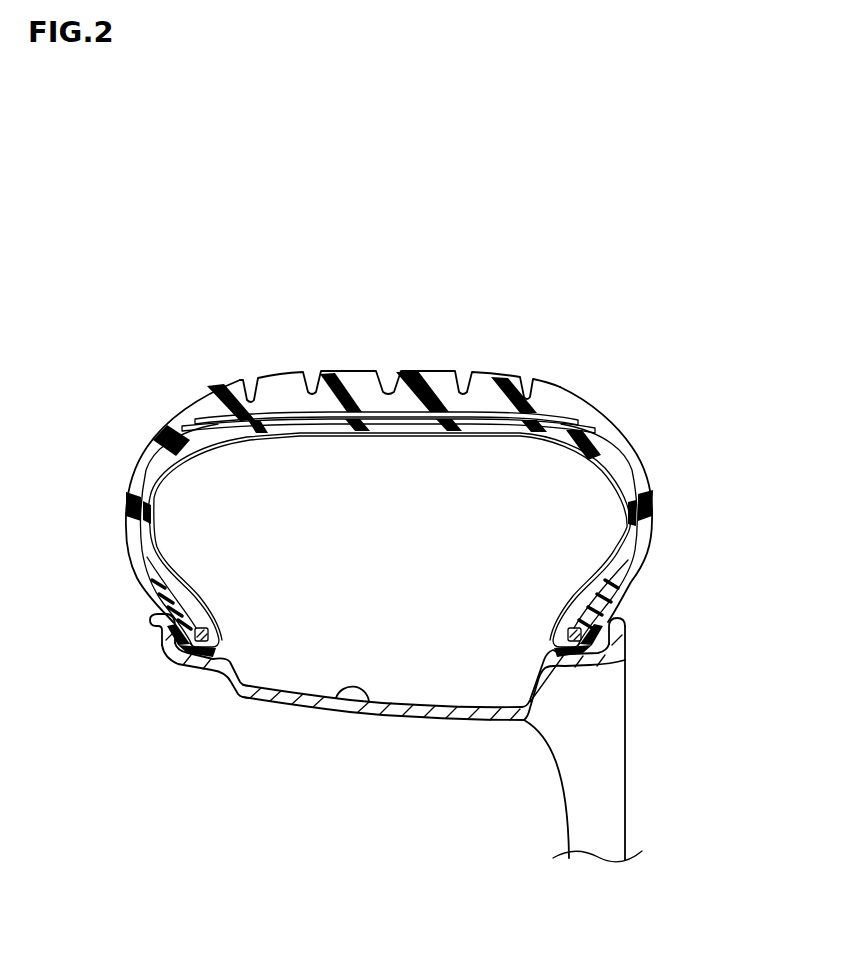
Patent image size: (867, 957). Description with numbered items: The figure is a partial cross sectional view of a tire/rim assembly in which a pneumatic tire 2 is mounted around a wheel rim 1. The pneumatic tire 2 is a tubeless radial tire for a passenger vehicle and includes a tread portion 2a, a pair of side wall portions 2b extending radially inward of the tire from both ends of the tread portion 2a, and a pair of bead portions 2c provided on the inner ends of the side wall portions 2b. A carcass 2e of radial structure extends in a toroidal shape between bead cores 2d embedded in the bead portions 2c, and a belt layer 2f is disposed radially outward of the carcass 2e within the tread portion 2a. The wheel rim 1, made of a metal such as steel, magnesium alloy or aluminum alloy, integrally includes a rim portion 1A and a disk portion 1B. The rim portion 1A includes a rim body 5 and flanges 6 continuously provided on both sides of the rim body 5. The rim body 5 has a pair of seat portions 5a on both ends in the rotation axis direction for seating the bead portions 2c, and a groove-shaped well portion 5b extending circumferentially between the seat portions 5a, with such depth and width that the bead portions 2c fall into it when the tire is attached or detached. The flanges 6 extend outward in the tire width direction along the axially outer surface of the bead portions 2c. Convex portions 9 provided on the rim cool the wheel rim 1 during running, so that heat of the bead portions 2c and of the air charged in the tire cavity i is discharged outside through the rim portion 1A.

The wheel rim 1 is at (427, 739).
The rim portion 1A is at (475, 726).
The disk portion 1B is at (609, 818).
The pneumatic tire 2 is at (387, 462).
The tread portion 2a is at (427, 363).
The side wall portions 2b is at (121, 491).
The bead portions 2c is at (224, 618).
The bead cores 2d is at (205, 628).
The carcass 2e is at (590, 454).
The belt layer 2f is at (480, 408).
The rim body 5 is at (386, 758).
The seat portions 5a is at (217, 643).
The well portion 5b is at (342, 696).
The flanges 6 is at (609, 641).
The convex portions 9 is at (588, 670).
The tire cavity i is at (402, 544).